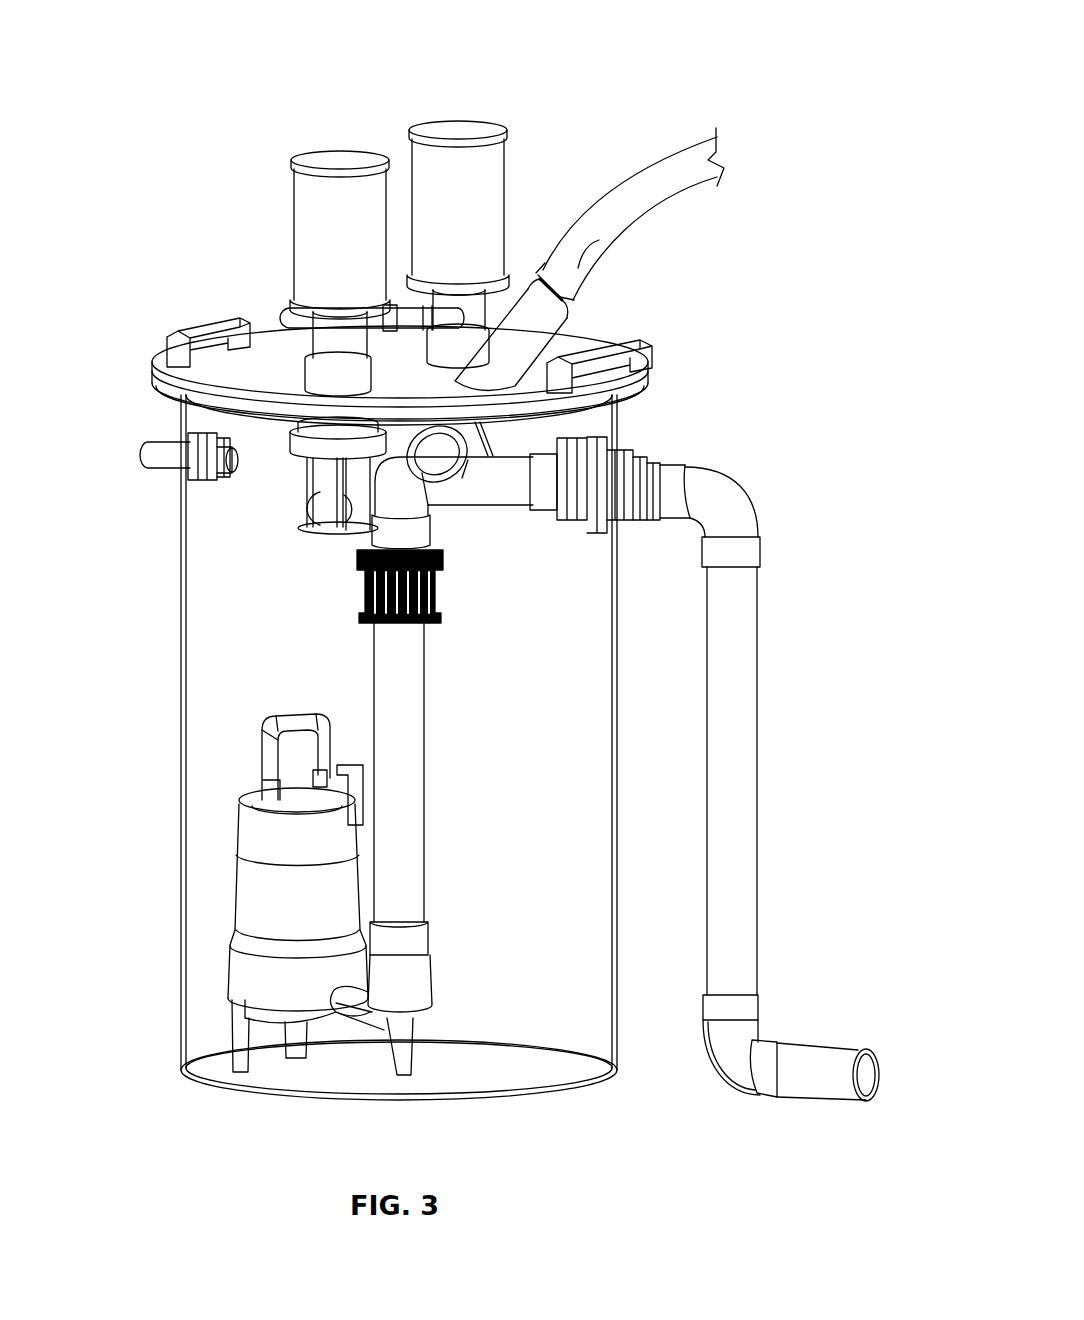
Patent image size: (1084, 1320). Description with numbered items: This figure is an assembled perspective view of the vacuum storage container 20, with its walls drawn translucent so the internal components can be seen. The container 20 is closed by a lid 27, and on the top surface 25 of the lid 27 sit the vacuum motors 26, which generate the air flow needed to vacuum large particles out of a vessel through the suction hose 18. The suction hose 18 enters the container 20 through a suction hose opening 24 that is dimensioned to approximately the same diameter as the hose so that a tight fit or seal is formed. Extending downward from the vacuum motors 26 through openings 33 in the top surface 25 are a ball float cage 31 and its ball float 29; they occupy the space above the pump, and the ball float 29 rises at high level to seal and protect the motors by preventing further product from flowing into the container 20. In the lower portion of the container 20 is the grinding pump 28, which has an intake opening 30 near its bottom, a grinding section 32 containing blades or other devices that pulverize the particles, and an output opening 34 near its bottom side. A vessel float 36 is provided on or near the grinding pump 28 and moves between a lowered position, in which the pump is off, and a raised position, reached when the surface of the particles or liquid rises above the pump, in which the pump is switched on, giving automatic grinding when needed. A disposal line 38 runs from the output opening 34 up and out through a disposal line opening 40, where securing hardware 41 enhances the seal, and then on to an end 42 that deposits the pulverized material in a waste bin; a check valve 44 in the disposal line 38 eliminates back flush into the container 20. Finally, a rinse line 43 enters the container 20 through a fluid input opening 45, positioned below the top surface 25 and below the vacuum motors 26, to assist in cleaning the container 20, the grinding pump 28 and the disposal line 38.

The suction hose 18 is at (668, 125).
The vacuum storage container 20 is at (142, 612).
The suction hose opening 24 is at (465, 334).
The top surface 25 is at (555, 355).
The vacuum motor 26 is at (474, 90).
The lid 27 is at (213, 377).
The grinding pump 28 is at (236, 882).
The ball float 29 is at (322, 507).
The intake opening 30 is at (288, 1053).
The ball float cage 31 is at (353, 533).
The grinding section 32 is at (272, 918).
The opening 33 is at (192, 392).
The output opening 34 is at (345, 1012).
The vessel float 36 is at (360, 788).
The disposal line 38 is at (413, 862).
The disposal line opening 40 is at (612, 445).
The securing hardware 41 is at (587, 533).
The end 42 is at (843, 1062).
The rinse line 43 is at (153, 458).
The check valve 44 is at (652, 460).
The fluid input opening 45 is at (200, 473).